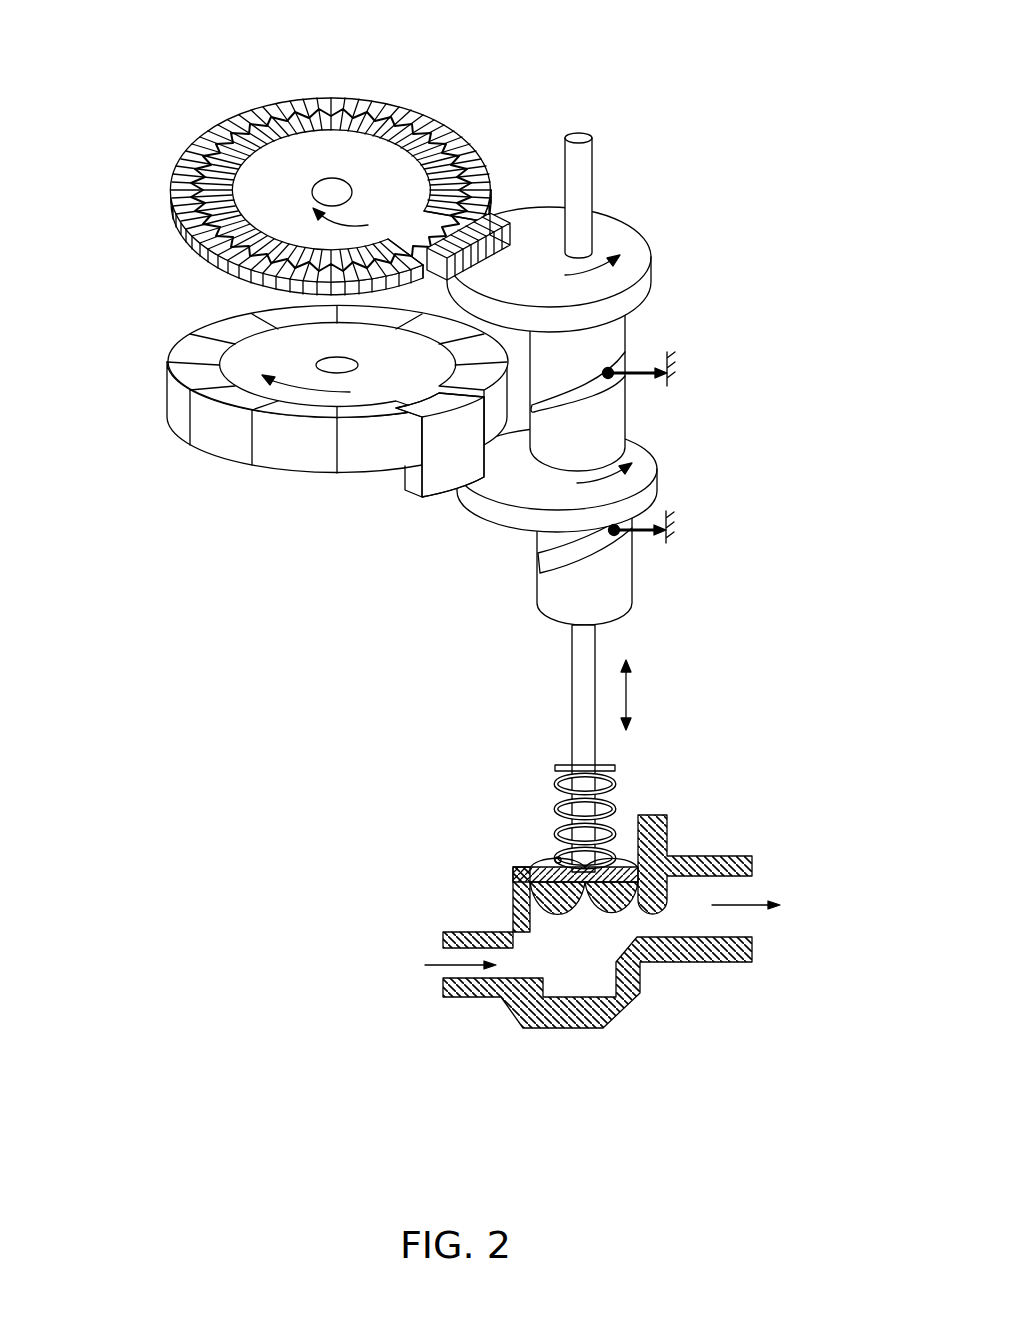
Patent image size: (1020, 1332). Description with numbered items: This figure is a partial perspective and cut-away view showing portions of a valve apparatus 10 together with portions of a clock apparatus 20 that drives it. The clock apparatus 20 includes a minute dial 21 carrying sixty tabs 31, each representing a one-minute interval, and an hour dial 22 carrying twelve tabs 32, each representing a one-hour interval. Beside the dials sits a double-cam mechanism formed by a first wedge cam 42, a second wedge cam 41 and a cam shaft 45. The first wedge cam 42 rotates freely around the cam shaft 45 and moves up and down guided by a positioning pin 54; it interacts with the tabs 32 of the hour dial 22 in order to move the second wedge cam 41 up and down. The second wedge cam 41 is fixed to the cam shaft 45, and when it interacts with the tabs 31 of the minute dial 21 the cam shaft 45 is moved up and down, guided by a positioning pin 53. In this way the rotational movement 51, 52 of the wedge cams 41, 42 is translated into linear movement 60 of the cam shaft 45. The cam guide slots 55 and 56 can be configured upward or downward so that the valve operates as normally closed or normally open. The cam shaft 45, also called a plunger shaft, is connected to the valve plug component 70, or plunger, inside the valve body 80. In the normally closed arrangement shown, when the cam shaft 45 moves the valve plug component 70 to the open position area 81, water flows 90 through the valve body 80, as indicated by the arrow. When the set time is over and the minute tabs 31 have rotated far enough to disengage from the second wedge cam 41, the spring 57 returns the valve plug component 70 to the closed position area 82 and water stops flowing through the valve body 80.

The valve apparatus 10 is at (752, 78).
The clock apparatus 20 is at (168, 148).
The minute dial 21 is at (291, 198).
The hour dial 22 is at (168, 382).
The tabs of the minute dial 31 is at (210, 263).
The tabs of the hour dial 32 is at (408, 492).
The second wedge cam 41 is at (614, 269).
The first wedge cam 42 is at (616, 480).
The cam shaft 45 is at (580, 137).
The rotational movement of the second wedge cam 51 is at (650, 282).
The rotational movement of the first wedge cam 52 is at (655, 485).
The positioning pin 53 is at (675, 372).
The positioning pin 54 is at (675, 532).
The cam guide slot 55 is at (563, 403).
The cam guide slot 56 is at (555, 562).
The spring 57 is at (547, 808).
The linear movement 60 is at (627, 692).
The valve plug component 70 is at (513, 869).
The valve body 80 is at (587, 967).
The open position area 81 is at (667, 828).
The closed position area 82 is at (567, 978).
The water flow 90 is at (428, 967).